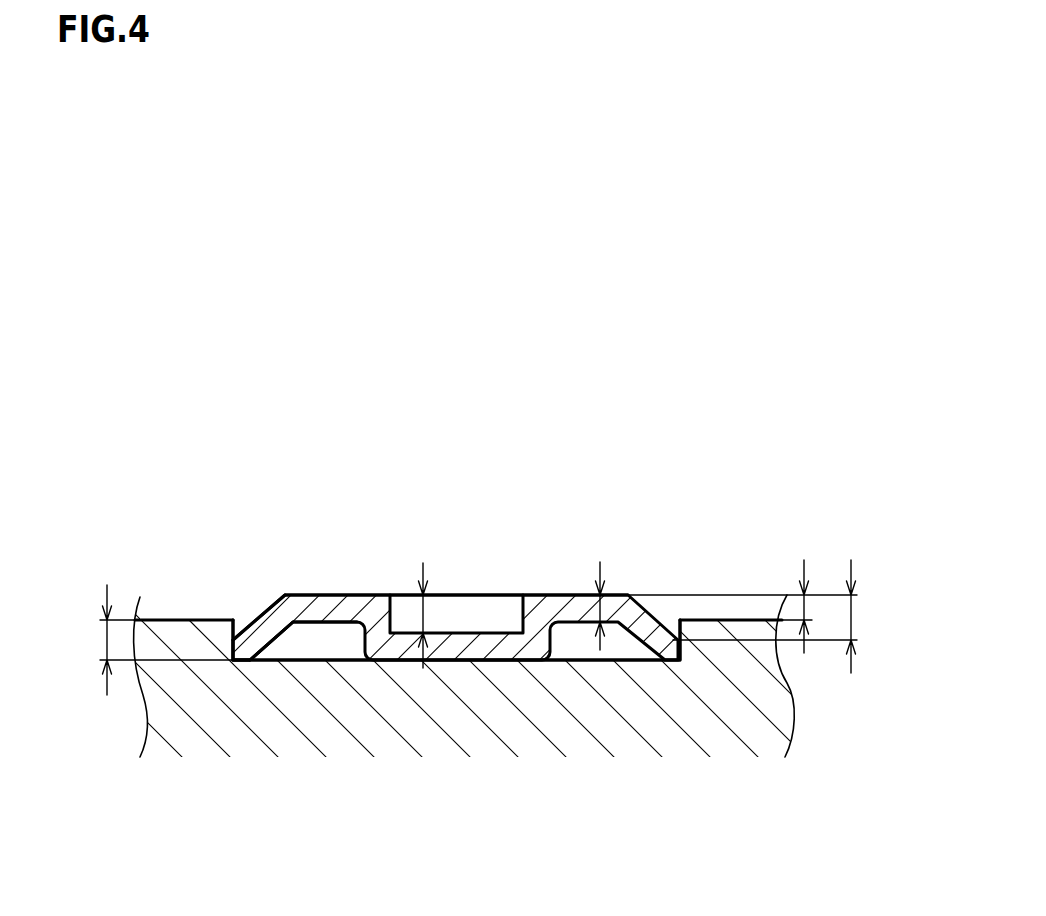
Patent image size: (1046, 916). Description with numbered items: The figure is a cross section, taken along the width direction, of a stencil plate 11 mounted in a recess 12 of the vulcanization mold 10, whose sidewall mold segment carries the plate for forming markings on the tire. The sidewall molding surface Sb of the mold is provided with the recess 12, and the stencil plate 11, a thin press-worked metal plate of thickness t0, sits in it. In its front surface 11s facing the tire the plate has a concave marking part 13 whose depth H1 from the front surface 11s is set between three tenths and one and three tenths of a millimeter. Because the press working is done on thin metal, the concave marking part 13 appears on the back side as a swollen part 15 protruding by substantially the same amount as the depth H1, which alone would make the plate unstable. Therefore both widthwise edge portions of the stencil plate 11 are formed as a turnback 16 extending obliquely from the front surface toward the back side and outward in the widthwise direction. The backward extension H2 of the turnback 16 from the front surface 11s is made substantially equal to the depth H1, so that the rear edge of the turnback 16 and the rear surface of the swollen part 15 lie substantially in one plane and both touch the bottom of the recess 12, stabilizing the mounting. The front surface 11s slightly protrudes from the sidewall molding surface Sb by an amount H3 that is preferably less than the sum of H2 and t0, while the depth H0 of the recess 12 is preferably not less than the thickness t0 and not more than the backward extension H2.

The vulcanization mold 10 is at (637, 738).
The sidewall molding surface Sb is at (183, 618).
The recess 12 is at (315, 658).
The stencil plate 11 is at (547, 612).
The front surface 11s is at (567, 595).
The concave marking part 13 is at (440, 620).
The turnback 16 is at (267, 610).
The swollen part 15 is at (412, 647).
The depth of the plate mounting recess H0 is at (150, 640).
The depth of the concave marking part H1 is at (418, 613).
The backward extension of the turnback H2 is at (761, 616).
The amount of protruding of the front surface H3 is at (812, 606).
The thickness of the metal plate t0 is at (600, 608).